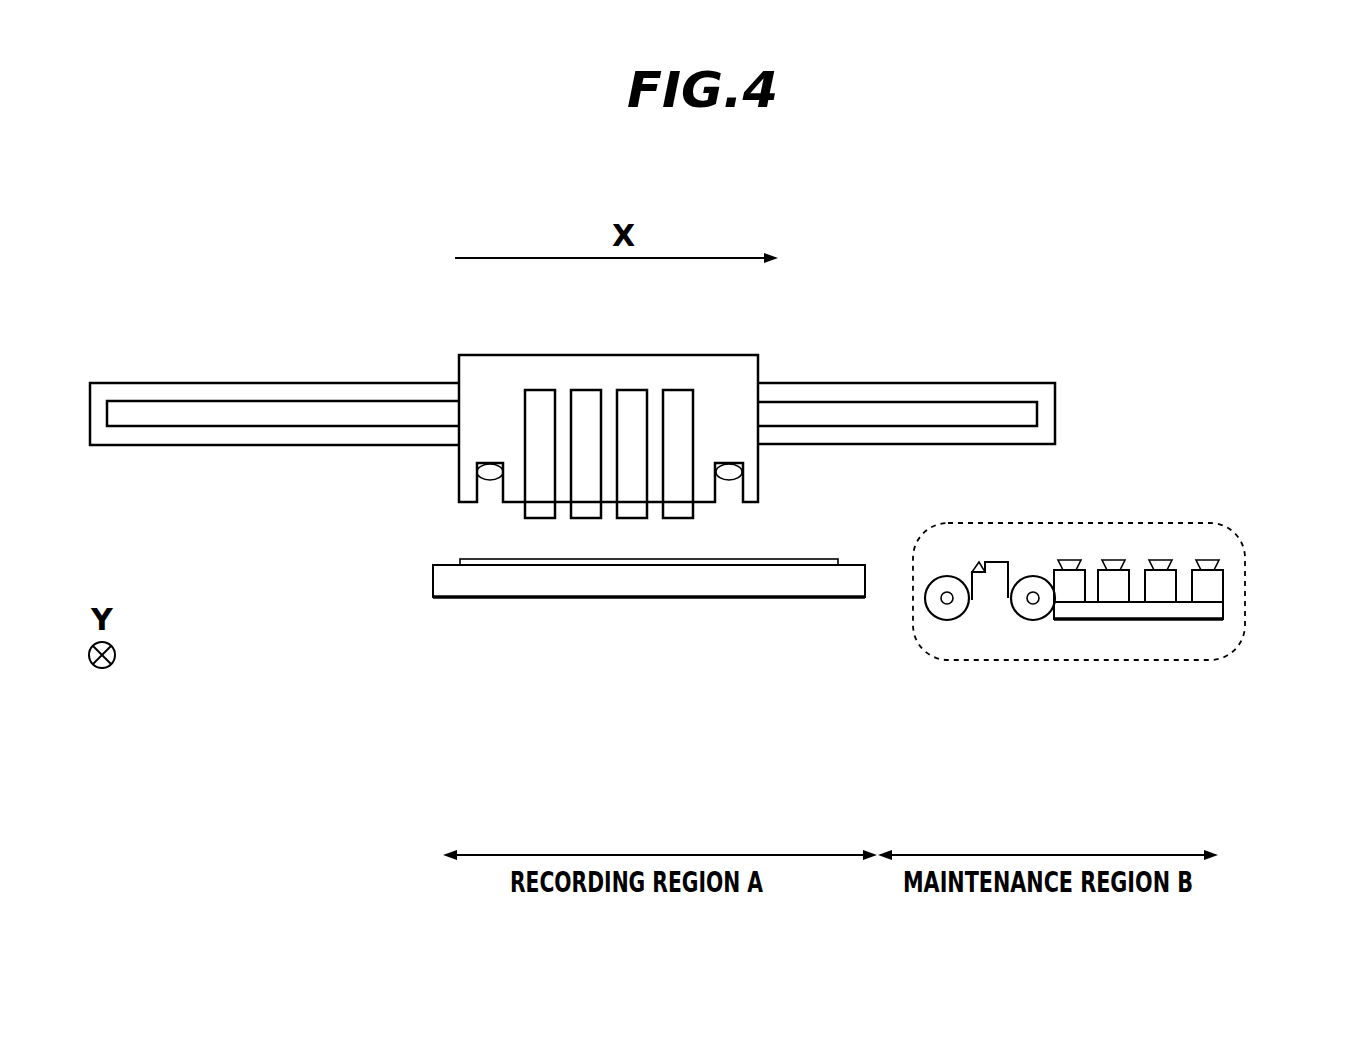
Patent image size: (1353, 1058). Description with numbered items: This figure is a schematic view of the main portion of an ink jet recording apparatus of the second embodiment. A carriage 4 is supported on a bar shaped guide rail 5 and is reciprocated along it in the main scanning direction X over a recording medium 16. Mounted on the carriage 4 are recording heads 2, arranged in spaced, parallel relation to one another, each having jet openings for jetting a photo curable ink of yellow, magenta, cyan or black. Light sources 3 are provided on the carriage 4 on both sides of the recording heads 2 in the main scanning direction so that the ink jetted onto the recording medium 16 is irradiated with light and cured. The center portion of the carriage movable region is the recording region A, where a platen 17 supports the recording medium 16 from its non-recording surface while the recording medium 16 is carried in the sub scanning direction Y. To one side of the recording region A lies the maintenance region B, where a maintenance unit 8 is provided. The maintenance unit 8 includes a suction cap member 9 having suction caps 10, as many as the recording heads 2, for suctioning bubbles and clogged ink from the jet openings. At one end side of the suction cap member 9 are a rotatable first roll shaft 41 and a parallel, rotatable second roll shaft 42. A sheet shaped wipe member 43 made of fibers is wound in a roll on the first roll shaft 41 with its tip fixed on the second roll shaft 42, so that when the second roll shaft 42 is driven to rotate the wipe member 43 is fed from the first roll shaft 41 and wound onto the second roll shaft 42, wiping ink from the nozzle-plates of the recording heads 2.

The recording head 2 is at (678, 405).
The light source 3 is at (478, 468).
The carriage 4 is at (478, 382).
The guide rail 5 is at (995, 392).
The maintenance unit 8 is at (1240, 499).
The suction cap member 9 is at (1176, 542).
The suction cap 10 is at (1212, 590).
The recording medium 16 is at (473, 557).
The platen 17 is at (615, 580).
The first roll shaft 41 is at (941, 600).
The second roll shaft 42 is at (1035, 605).
The wipe member 43 is at (991, 562).